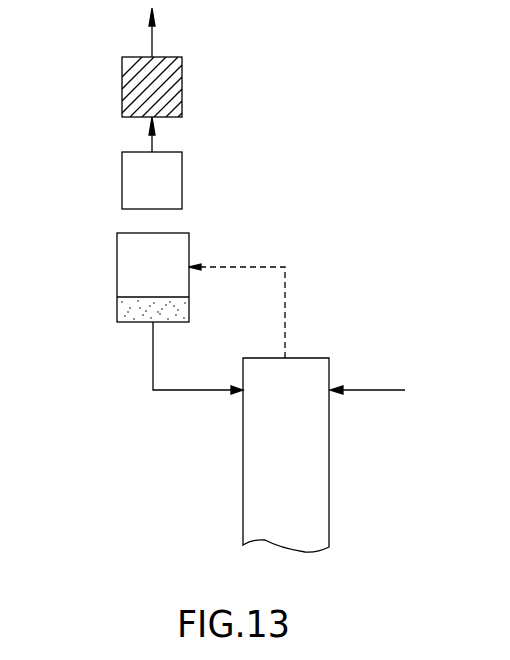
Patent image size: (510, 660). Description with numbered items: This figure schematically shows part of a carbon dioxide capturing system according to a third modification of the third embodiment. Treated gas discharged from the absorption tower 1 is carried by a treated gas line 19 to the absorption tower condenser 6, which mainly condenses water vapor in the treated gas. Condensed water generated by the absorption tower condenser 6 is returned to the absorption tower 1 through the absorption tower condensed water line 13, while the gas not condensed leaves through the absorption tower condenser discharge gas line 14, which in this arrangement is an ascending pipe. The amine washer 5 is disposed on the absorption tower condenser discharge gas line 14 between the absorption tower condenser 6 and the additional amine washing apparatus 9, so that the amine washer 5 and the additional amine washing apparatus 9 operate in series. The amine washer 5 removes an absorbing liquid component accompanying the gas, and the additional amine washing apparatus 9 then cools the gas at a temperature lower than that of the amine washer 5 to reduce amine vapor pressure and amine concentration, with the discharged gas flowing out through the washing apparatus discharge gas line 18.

The absorption tower 1 is at (330, 372).
The amine washer 5 is at (122, 188).
The absorption tower condenser 6 is at (117, 260).
The additional amine washing apparatus 9 is at (122, 84).
The absorption tower condensed water line 13 is at (178, 393).
The absorption tower condenser discharge gas line 14 is at (152, 148).
The washing apparatus discharge gas line 18 is at (152, 42).
The treated gas line 19 is at (285, 282).